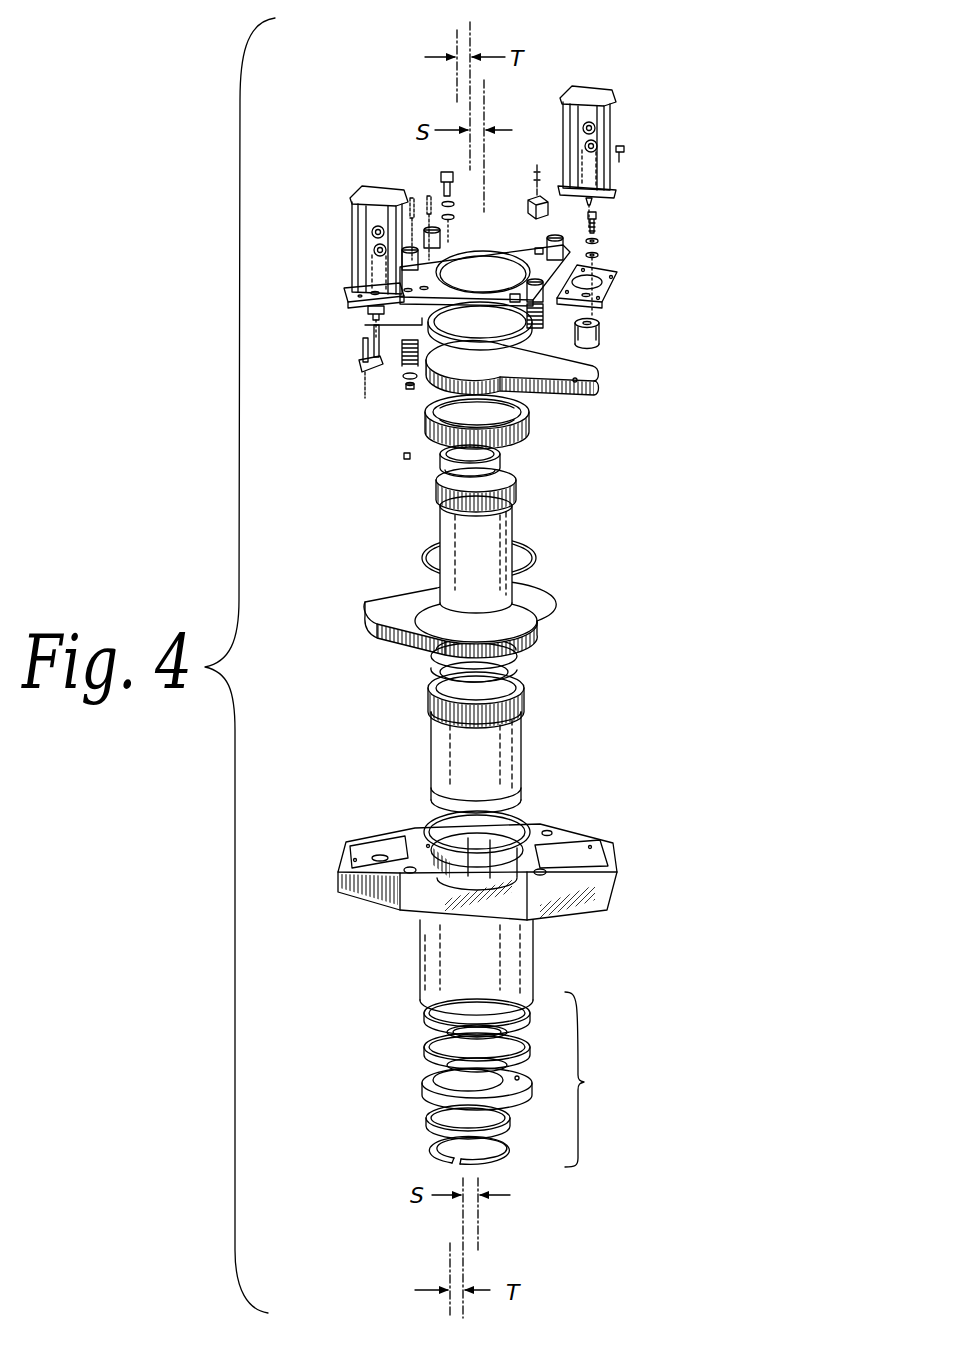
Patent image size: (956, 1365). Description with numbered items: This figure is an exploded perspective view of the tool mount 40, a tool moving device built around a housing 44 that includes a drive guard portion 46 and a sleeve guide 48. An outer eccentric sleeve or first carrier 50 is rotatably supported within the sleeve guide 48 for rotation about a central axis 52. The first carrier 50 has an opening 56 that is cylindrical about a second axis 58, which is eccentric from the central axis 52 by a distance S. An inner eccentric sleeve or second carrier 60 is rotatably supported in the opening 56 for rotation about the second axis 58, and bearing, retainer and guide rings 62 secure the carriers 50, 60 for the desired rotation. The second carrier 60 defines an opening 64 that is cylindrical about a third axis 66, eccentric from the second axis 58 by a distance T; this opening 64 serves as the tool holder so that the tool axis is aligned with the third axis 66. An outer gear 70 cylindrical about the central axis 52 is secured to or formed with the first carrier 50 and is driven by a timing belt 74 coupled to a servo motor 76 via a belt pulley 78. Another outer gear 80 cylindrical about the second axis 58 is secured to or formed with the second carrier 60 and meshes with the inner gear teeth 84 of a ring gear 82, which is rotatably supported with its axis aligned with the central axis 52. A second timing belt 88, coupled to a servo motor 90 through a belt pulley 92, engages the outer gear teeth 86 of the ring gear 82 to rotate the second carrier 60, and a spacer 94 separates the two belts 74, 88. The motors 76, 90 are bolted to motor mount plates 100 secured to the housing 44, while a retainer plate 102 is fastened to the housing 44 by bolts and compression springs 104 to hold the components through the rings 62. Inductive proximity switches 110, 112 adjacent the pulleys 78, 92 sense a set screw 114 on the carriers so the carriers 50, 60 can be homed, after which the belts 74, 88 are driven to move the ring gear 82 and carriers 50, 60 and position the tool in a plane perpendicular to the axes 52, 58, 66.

The tool mount 40 is at (590, 702).
The housing 44 is at (523, 960).
The drive guard portion 46 is at (615, 875).
The sleeve guide 48 is at (430, 968).
The outer eccentric sleeve or first carrier 50 is at (510, 756).
The central axis 52 is at (484, 185).
The opening 56 is at (500, 665).
The second axis 58 is at (471, 42).
The inner eccentric sleeve or second carrier 60 is at (490, 530).
The bearing, retainer and guide rings 62 is at (448, 330).
The opening 64 is at (525, 450).
The third axis 66 is at (456, 42).
The outer gear 70 is at (436, 690).
The timing belt 74 is at (375, 600).
The servo motor 76 is at (352, 233).
The belt pulley 78 is at (370, 302).
The outer gear 80 is at (500, 478).
The ring gear 82 is at (548, 422).
The inner gear teeth 84 is at (478, 404).
The outer gear teeth 86 is at (516, 436).
The timing belt 88 is at (598, 385).
The servo motor 90 is at (614, 98).
The belt pulley 92 is at (600, 332).
The spacer 94 is at (534, 560).
The motor mount plates 100 is at (348, 292).
The retainer plate 102 is at (448, 282).
The compression springs 104 is at (544, 320).
The inductive proximity switch 110 is at (358, 350).
The inductive proximity switch 112 is at (534, 195).
The set screw 114 is at (404, 458).